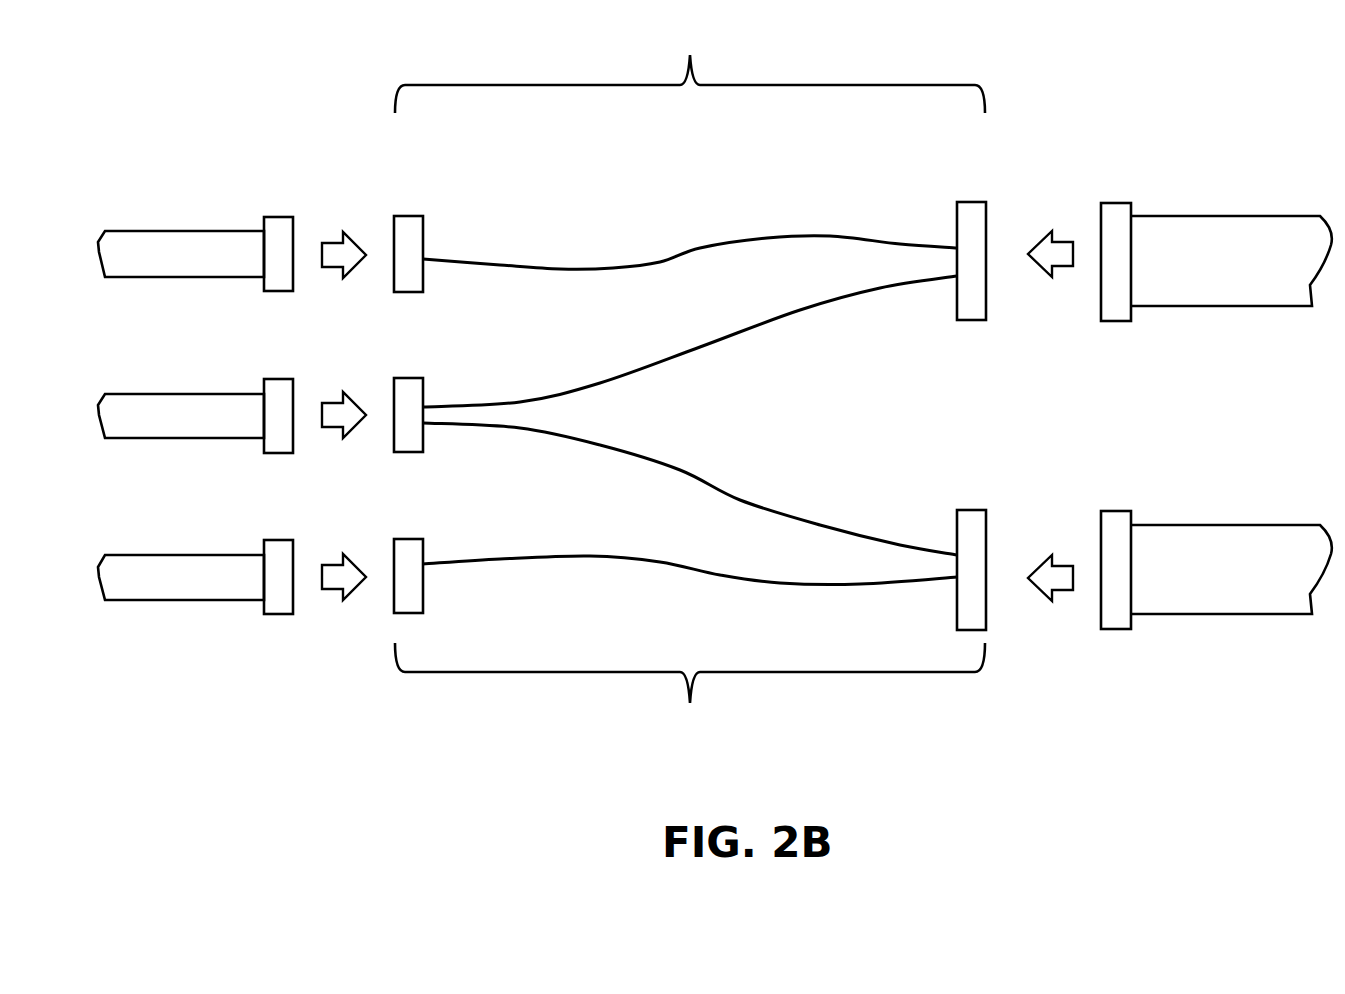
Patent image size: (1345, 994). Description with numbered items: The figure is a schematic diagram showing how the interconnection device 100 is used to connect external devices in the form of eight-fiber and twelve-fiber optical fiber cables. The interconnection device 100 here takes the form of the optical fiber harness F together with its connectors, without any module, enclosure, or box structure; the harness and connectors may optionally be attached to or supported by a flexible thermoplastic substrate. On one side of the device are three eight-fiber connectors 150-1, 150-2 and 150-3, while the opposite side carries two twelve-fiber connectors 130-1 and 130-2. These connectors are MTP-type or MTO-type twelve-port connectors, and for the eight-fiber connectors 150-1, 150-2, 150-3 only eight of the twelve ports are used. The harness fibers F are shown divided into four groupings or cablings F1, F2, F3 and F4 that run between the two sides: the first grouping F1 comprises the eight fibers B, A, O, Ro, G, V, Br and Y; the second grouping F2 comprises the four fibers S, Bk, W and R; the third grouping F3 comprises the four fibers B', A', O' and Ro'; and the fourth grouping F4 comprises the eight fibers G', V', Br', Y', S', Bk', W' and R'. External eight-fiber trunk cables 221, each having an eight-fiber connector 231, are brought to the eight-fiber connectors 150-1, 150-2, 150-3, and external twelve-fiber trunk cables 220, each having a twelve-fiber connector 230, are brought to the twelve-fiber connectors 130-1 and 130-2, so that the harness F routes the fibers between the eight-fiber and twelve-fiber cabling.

The interconnection device 100 is at (690, 365).
The optical fiber harness F is at (661, 192).
The first fiber grouping F1 is at (593, 268).
The second fiber grouping F2 is at (568, 392).
The third fiber grouping F3 is at (741, 500).
The fourth fiber grouping F4 is at (663, 563).
The first 8f connector 150-1 is at (406, 216).
The second 8f connector 150-2 is at (406, 378).
The third 8f connector 150-3 is at (406, 539).
The first 12f connector 130-1 is at (975, 202).
The second 12f connector 130-2 is at (975, 510).
The 8-f trunk cable 221 is at (176, 210).
The 8-f connector 231 is at (277, 217).
The 12-f trunk cable 220 is at (1189, 193).
The 12-f connector 230 is at (1117, 203).